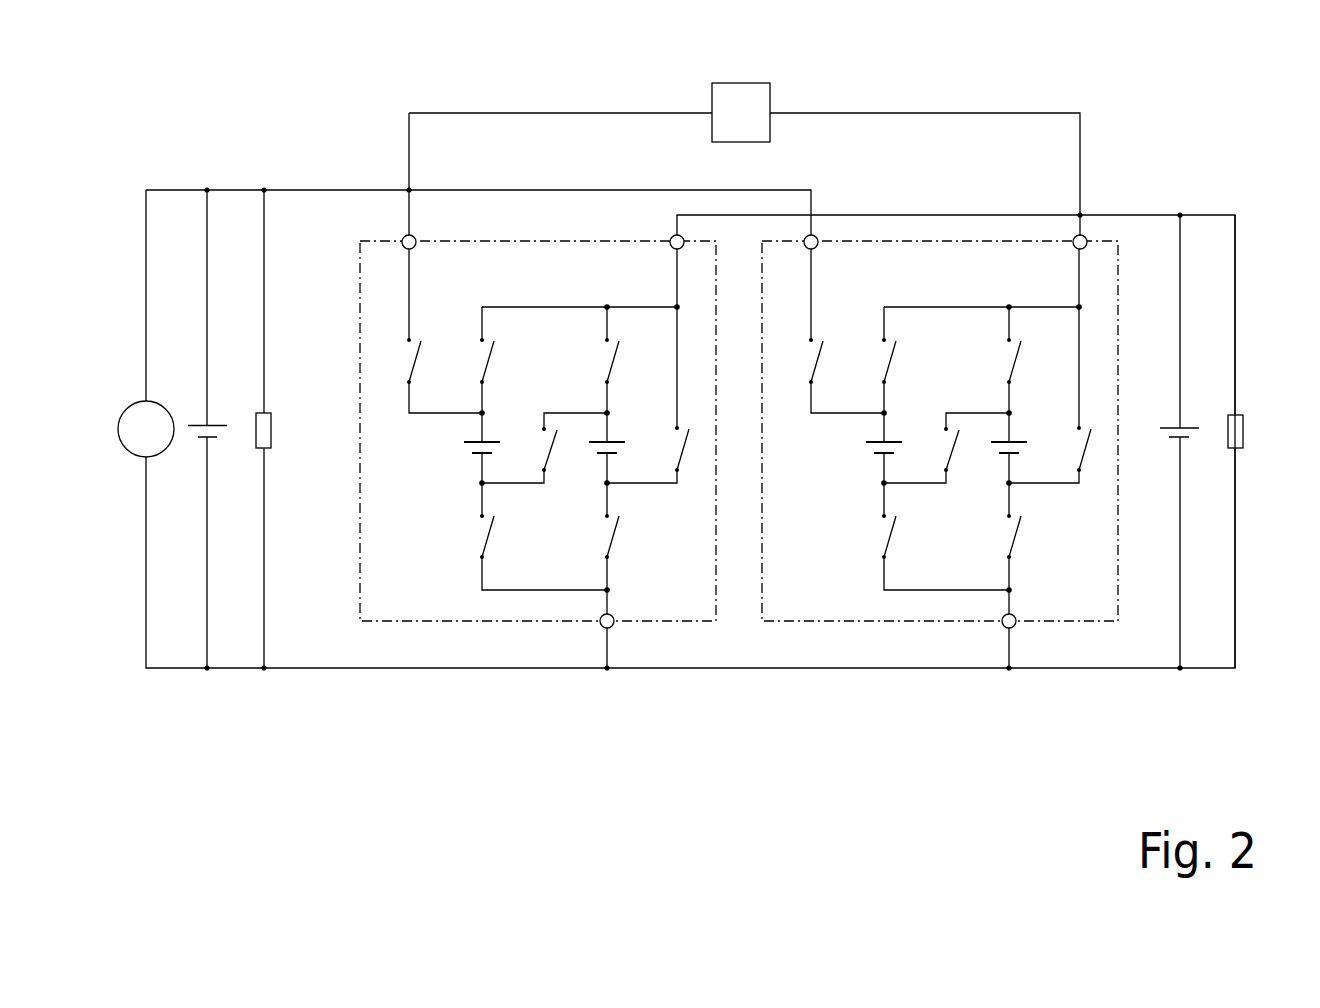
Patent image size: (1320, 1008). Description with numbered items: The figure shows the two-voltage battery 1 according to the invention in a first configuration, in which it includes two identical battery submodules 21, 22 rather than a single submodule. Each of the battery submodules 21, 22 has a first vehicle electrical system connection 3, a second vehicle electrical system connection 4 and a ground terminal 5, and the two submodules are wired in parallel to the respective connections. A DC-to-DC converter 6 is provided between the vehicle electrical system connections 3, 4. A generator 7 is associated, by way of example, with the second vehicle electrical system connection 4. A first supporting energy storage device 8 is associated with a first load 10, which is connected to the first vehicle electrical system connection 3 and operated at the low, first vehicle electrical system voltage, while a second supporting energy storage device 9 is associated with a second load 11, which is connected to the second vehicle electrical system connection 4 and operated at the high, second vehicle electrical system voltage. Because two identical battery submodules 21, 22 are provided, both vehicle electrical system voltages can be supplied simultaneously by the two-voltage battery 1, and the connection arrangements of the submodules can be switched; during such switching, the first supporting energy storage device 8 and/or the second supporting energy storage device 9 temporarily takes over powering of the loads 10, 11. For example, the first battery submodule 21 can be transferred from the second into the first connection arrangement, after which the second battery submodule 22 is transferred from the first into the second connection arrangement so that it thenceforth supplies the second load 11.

The two-voltage battery 1 is at (955, 146).
The first battery submodule 21 is at (536, 221).
The second battery submodule 22 is at (1014, 226).
The first vehicle electrical system connection 3 is at (673, 236).
The second vehicle electrical system connection 4 is at (405, 236).
The ground terminal 5 is at (609, 628).
The DC-to-DC converter 6 is at (732, 126).
The generator 7 is at (137, 445).
The first supporting energy storage device 8 is at (1201, 410).
The second supporting energy storage device 9 is at (195, 462).
The first load 10 is at (1243, 435).
The second load 11 is at (288, 407).